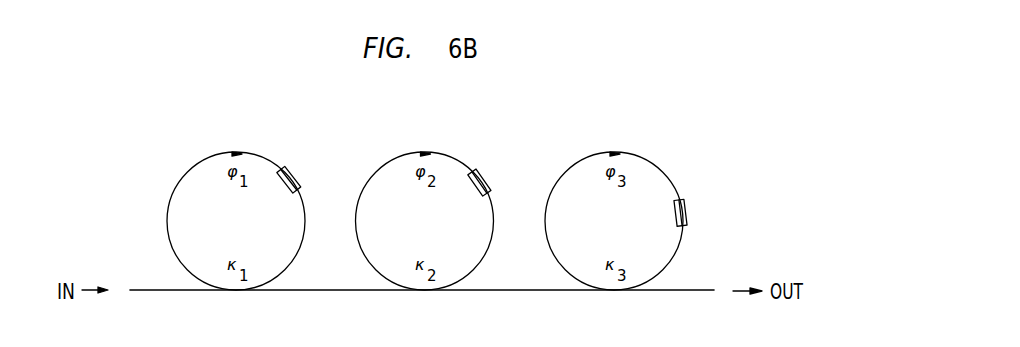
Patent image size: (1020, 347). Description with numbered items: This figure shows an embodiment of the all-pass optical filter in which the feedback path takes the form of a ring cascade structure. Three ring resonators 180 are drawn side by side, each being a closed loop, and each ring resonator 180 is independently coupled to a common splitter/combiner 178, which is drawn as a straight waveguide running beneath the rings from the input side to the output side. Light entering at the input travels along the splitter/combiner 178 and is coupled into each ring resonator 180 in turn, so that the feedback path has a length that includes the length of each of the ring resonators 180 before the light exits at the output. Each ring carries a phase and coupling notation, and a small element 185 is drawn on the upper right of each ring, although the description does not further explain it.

The splitter/combiner 178 is at (519, 291).
The ring resonator 180 is at (202, 163).
The coupler / phase shifter element 185 is at (296, 176).